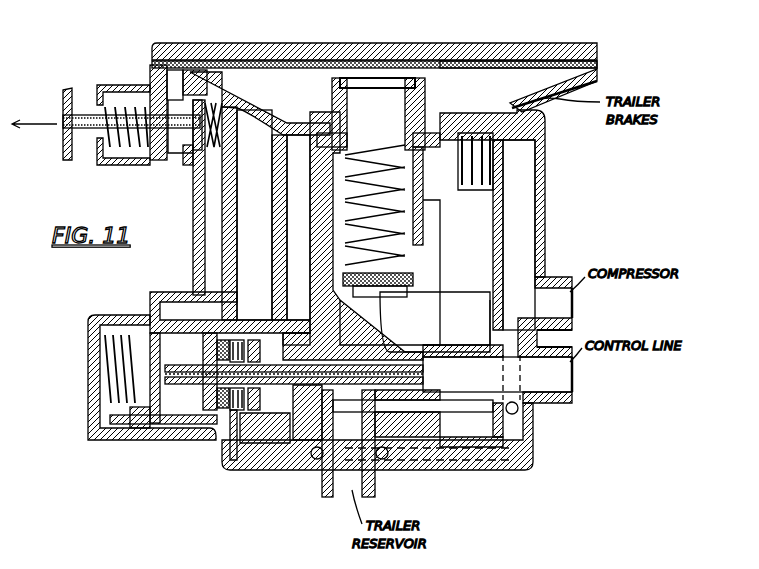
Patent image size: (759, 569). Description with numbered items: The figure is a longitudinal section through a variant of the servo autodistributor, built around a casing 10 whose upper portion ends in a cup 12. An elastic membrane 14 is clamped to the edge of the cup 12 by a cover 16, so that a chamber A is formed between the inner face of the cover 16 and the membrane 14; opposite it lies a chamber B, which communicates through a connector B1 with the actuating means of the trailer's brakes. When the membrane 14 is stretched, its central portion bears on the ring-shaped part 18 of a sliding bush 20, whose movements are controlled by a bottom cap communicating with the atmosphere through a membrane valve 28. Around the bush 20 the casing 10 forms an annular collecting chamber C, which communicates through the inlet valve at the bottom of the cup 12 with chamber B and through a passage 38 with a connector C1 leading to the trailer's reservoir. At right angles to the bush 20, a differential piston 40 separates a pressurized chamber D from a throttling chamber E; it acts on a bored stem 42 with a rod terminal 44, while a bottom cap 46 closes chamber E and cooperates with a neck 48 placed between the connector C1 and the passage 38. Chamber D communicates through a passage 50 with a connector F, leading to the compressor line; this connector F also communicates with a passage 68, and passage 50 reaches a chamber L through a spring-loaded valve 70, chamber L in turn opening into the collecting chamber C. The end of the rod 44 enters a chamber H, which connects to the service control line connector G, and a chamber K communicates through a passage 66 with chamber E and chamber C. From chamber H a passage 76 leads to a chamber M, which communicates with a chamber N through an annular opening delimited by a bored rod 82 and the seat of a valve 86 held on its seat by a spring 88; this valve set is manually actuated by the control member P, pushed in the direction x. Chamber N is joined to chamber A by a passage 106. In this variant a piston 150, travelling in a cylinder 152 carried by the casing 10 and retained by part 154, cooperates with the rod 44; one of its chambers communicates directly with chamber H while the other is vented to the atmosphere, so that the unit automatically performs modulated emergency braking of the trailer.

The control member P is at (66, 92).
The direction arrow x is at (34, 137).
The spring 88 is at (108, 98).
The passage 106 is at (172, 82).
The chamber M is at (202, 92).
The cover 16 is at (270, 52).
The elastic membrane 14 is at (322, 64).
The ring-shaped part 18 is at (422, 78).
The chamber A is at (487, 66).
The chamber B is at (525, 78).
The connector B1 is at (537, 100).
The cup 12 is at (262, 112).
The annular chamber C is at (278, 158).
The chamber N is at (185, 168).
The bored rod 82 is at (200, 160).
The valve 86 is at (197, 150).
The passage 38 is at (292, 221).
The passage 76 is at (209, 259).
The valve 70 is at (490, 165).
The casing 10 is at (550, 220).
The passage 68 is at (525, 258).
The chamber K is at (113, 340).
The piston 40 is at (260, 335).
The sliding bush 20 is at (430, 258).
The chamber L is at (475, 210).
The membrane valve 28 is at (385, 292).
The neck 48 is at (355, 326).
The bored stem 42 is at (420, 355).
The connector F is at (562, 306).
The service control line connector G is at (565, 373).
The bottom cap 46 is at (372, 413).
The passage 66 is at (108, 430).
The rod terminal 44 is at (168, 385).
The chamber H is at (180, 405).
The cylinder 152 is at (192, 415).
The piston 150 is at (204, 445).
The valve cage 154 is at (240, 420).
The pressurized chamber D is at (260, 410).
The throttling chamber E is at (300, 410).
The passage 50 is at (483, 455).
The connector C1 is at (345, 492).